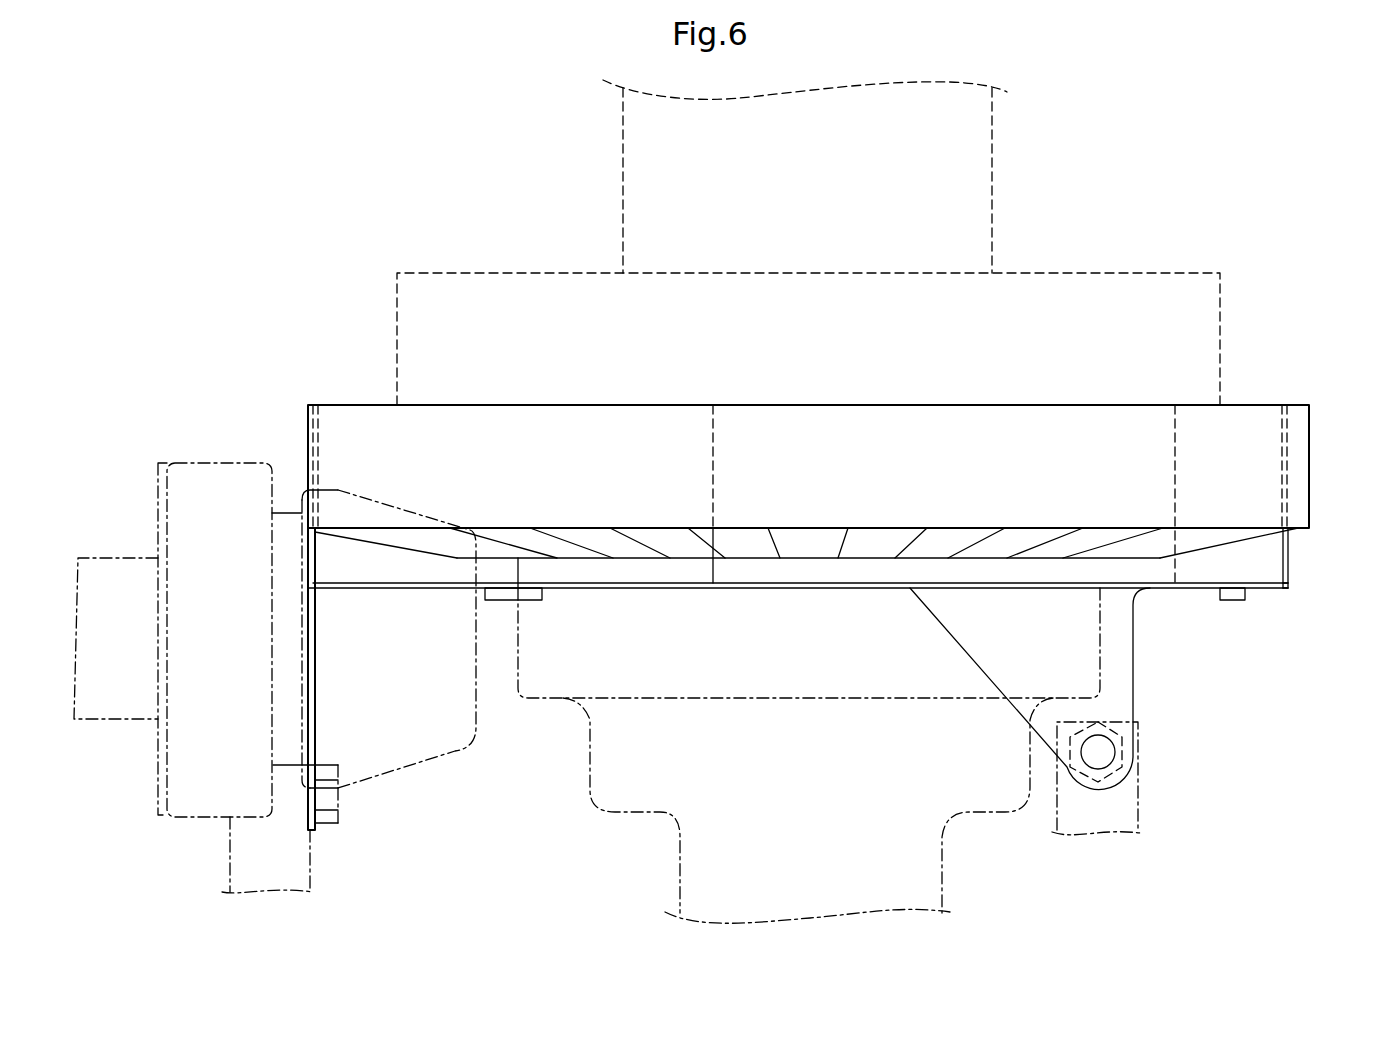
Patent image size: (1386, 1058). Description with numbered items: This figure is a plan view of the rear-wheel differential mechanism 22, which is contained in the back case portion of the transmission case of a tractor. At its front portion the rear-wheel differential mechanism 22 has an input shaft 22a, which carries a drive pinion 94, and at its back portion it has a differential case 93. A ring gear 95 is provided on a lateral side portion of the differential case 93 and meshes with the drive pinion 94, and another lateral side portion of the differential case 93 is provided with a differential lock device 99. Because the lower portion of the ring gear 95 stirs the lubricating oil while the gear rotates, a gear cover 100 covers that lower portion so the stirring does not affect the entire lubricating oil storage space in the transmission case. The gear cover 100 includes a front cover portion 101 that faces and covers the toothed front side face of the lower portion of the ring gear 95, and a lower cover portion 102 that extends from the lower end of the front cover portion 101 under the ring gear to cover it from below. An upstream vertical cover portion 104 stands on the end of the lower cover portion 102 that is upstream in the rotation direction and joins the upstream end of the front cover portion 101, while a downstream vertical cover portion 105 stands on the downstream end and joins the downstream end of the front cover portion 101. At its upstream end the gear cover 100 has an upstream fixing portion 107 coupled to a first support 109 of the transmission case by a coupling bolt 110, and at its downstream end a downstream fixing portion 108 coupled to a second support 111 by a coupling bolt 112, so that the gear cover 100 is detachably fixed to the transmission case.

The rear-wheel differential mechanism 22 is at (160, 273).
The input shaft 22a is at (92, 722).
The differential case 93 is at (542, 700).
The drive pinion 94 is at (403, 767).
The ring gear 95 is at (508, 470).
The differential lock device 99 is at (395, 290).
The gear cover 100 is at (1296, 637).
The front cover portion 101 is at (603, 588).
The lower cover portion 102 is at (800, 572).
The upstream vertical cover portion 104 is at (308, 453).
The downstream vertical cover portion 105 is at (1288, 553).
The upstream fixing portion 107 is at (320, 682).
The downstream fixing portion 108 is at (1068, 650).
The first support 109 is at (227, 845).
The coupling bolt 110 is at (325, 825).
The second support 111 is at (1138, 798).
The coupling bolt 112 is at (1123, 745).